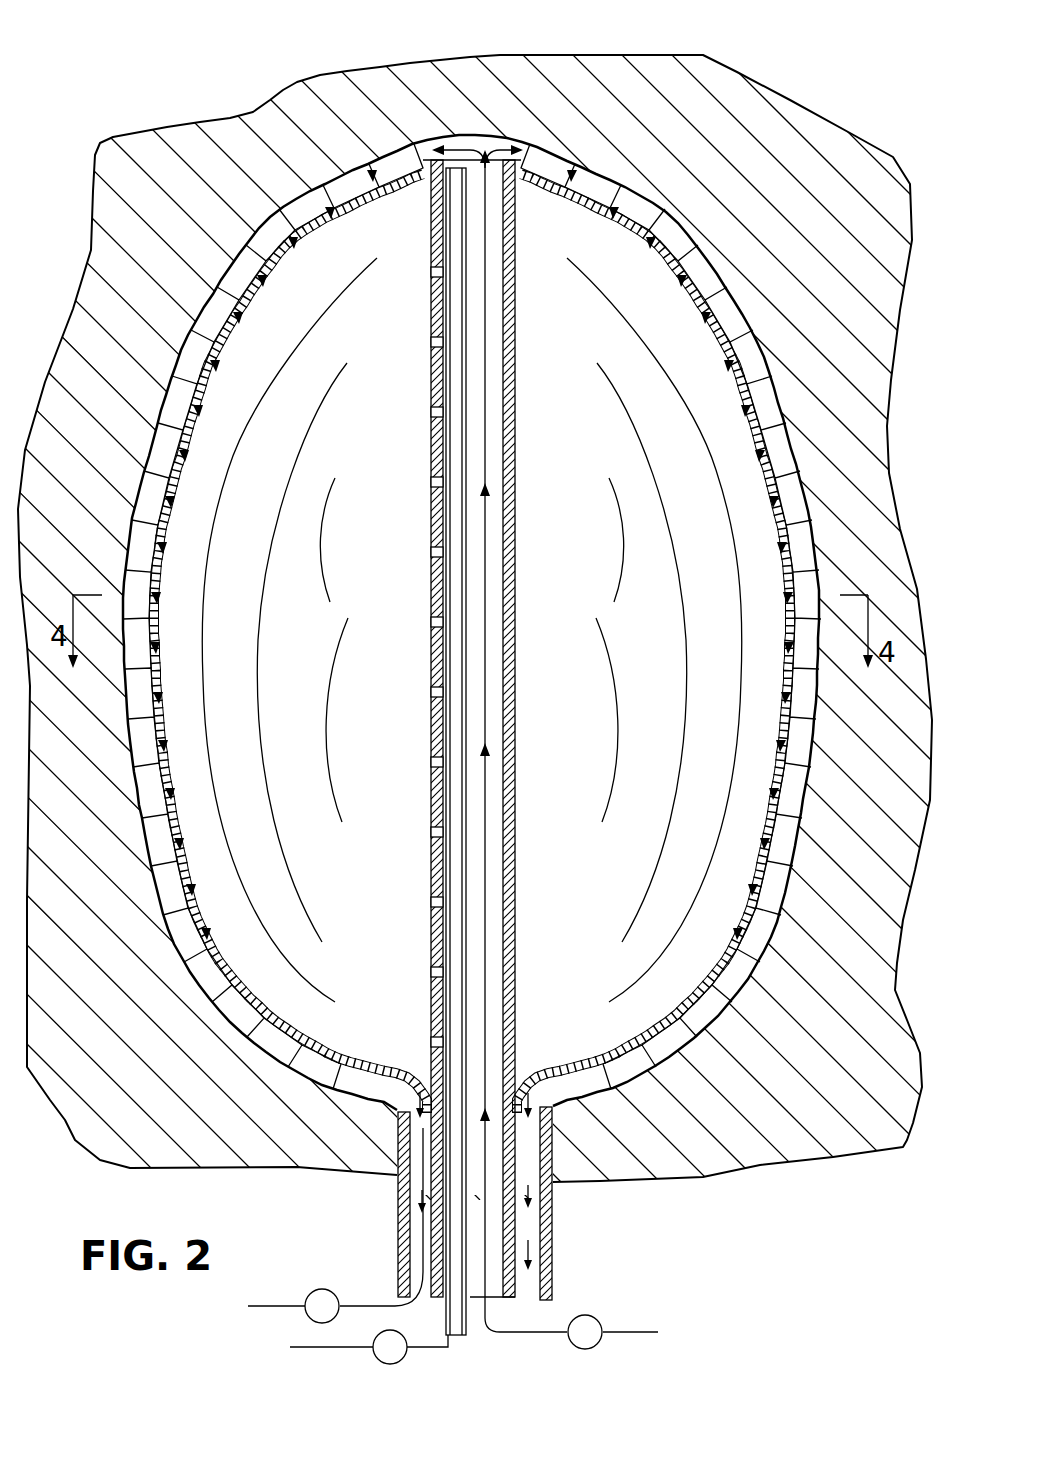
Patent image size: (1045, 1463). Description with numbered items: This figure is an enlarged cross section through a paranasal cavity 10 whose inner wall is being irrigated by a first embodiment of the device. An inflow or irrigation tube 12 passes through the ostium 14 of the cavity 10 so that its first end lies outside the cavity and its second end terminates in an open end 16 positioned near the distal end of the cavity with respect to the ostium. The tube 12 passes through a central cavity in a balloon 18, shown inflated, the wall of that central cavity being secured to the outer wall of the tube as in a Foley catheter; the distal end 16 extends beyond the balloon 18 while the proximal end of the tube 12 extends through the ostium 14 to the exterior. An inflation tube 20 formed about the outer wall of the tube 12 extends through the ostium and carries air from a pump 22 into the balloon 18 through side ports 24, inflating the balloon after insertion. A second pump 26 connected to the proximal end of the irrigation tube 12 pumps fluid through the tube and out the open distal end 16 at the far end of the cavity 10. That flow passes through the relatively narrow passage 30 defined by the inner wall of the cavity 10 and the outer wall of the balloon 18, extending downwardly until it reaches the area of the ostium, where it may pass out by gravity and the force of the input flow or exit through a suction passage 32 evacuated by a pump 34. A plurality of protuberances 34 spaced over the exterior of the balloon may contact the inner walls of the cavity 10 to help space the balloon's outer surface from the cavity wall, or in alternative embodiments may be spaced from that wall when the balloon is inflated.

The paranasal cavity 10 is at (660, 205).
The irrigation tube 12 is at (517, 649).
The ostium 14 is at (556, 1150).
The open end 16 is at (473, 152).
The balloon 18 is at (782, 392).
The inflation tube 20 is at (500, 507).
The pump 22 is at (408, 1353).
The side ports 24 is at (437, 602).
The second pump 26 is at (600, 1318).
The narrow passage 30 is at (742, 318).
The suction passage 32 is at (372, 1298).
The protuberances 34 is at (178, 380).